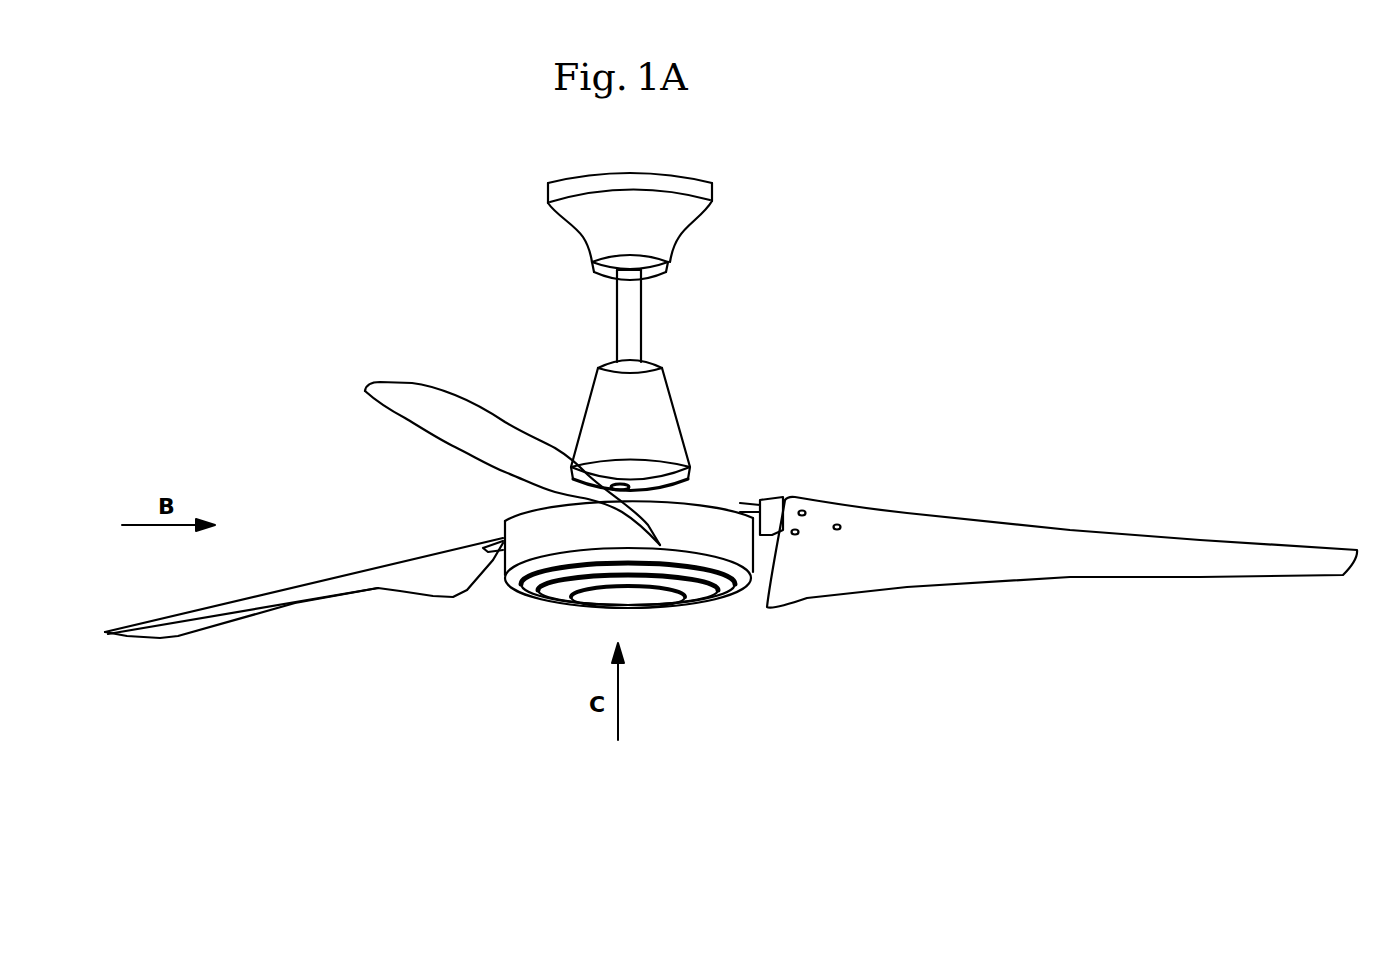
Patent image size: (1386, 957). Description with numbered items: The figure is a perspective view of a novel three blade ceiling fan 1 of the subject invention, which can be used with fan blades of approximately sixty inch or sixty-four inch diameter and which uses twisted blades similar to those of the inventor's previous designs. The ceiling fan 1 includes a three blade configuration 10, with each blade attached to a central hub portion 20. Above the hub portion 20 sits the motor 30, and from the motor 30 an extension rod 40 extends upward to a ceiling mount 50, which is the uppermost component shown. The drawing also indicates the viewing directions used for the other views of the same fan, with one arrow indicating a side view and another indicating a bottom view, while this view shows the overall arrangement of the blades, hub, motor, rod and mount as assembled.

The three blade ceiling fan 1 is at (320, 258).
The three blade configuration 10 is at (462, 428).
The hub portion 20 is at (643, 600).
The motor 30 is at (667, 430).
The extension rod 40 is at (643, 320).
The ceiling mount 50 is at (680, 213).